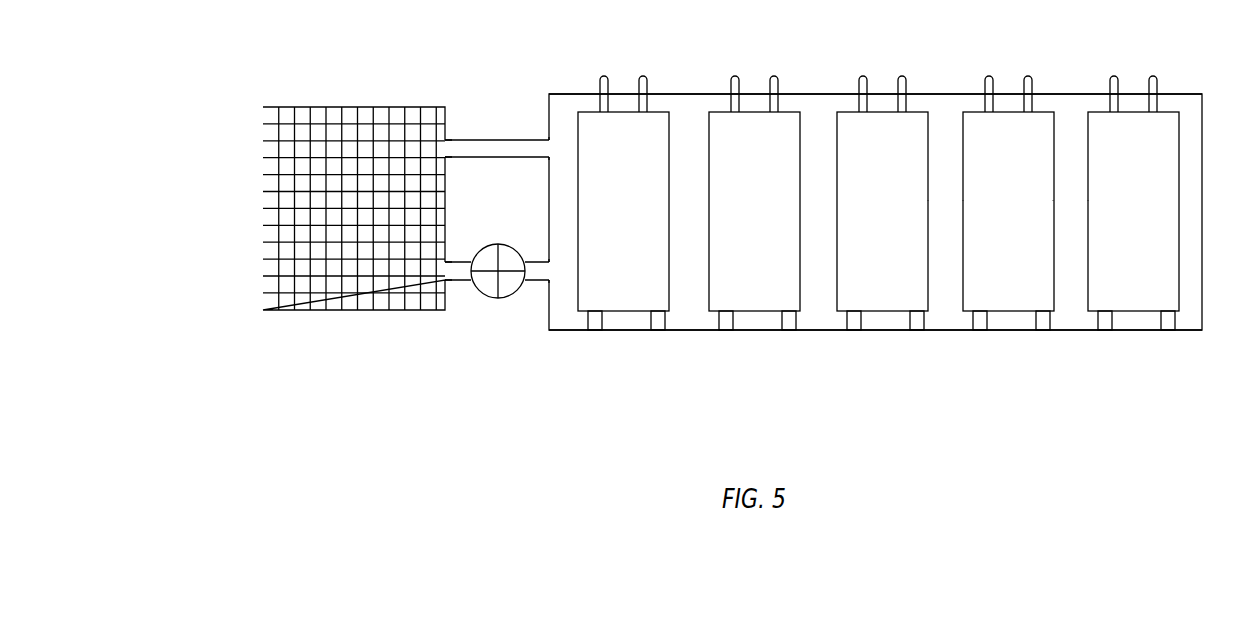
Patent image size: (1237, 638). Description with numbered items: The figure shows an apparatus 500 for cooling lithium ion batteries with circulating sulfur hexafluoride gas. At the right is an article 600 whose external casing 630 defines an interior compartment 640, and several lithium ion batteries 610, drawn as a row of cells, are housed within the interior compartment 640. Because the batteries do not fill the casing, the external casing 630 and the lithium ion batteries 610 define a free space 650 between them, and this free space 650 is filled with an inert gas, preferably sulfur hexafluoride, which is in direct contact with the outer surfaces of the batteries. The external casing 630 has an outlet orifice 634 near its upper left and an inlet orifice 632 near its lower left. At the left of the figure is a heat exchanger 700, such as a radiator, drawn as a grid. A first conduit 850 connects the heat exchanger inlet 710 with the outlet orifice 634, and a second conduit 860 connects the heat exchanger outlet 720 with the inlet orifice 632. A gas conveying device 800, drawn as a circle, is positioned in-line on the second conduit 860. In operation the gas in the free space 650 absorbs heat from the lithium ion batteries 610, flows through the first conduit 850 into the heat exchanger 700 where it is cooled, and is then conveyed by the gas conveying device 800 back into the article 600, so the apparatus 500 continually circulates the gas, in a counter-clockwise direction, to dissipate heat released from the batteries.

The apparatus 500 is at (360, 444).
The article 600 is at (684, 355).
The lithium ion batteries 610 is at (970, 132).
The external casing 630 is at (889, 332).
The inlet orifice 632 is at (551, 272).
The outlet orifice 634 is at (548, 150).
The interior compartment 640 is at (1070, 112).
The free space 650 is at (942, 265).
The heat exchanger 700 is at (262, 218).
The heat exchanger inlet 710 is at (447, 148).
The heat exchanger outlet 720 is at (447, 272).
The gas conveying device 800 is at (512, 297).
The first conduit 850 is at (500, 140).
The second conduit 860 is at (462, 281).